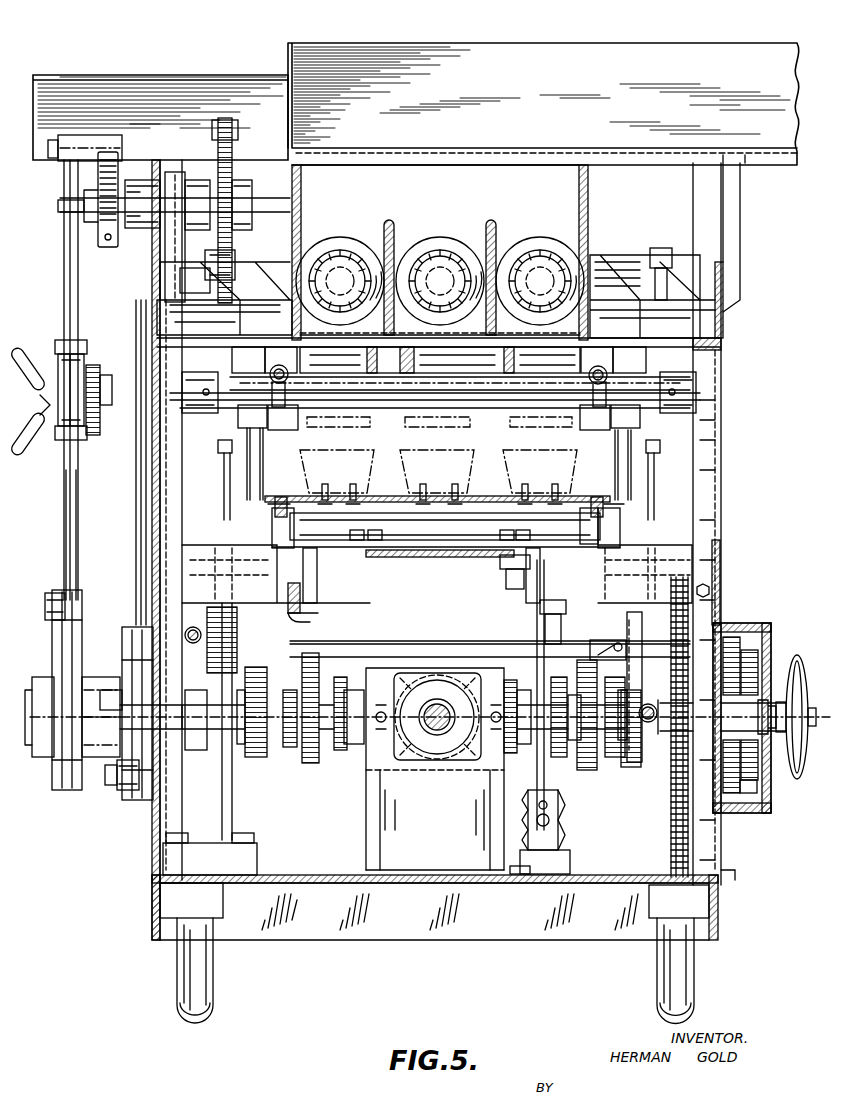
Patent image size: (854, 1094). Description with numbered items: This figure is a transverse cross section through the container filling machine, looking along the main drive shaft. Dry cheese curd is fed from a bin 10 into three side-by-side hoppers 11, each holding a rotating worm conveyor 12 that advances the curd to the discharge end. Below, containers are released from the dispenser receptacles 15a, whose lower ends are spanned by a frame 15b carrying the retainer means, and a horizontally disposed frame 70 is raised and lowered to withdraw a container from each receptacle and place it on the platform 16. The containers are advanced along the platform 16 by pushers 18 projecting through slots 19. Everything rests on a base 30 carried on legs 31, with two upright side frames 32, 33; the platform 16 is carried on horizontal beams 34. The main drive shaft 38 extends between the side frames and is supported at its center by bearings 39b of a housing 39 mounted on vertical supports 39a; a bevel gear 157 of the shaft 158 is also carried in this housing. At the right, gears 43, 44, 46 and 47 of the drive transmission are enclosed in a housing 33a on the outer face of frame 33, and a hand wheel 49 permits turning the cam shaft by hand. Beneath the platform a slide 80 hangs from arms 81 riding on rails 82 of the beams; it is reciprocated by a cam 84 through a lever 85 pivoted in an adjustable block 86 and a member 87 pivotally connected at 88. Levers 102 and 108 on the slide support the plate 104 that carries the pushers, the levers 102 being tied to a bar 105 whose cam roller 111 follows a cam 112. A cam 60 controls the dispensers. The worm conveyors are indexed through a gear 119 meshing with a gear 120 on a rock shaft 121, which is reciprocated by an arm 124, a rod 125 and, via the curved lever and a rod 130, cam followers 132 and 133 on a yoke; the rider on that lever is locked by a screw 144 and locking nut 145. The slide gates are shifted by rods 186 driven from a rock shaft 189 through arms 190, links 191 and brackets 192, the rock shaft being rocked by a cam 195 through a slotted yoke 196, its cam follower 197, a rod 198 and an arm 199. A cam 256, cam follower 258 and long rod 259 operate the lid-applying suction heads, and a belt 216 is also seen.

The bin 10 is at (568, 64).
The hopper 11 is at (318, 228).
The worm conveyor 12 is at (352, 250).
The receptacle 15a is at (415, 360).
The frame 15b is at (492, 378).
The platform 16 is at (590, 496).
The pusher 18 is at (422, 490).
The slot 19 is at (522, 493).
The base 30 is at (292, 876).
The leg 31 is at (210, 1022).
The side frame 32 is at (174, 502).
The side frame 33 is at (722, 464).
The housing 33a is at (724, 838).
The beam 34 is at (278, 500).
The main drive shaft 38 is at (236, 762).
The housing 39 is at (453, 768).
The vertical support 39a is at (488, 824).
The bearing 39b is at (512, 756).
The gear 43 is at (755, 735).
The gear 44 is at (736, 840).
The gear 46 is at (726, 700).
The gear 47 is at (750, 616).
The hand wheel 49 is at (796, 656).
The cam 60 is at (318, 764).
The frame 70 is at (492, 406).
The slide 80 is at (420, 560).
The arm 81 is at (340, 565).
The rail 82 is at (296, 540).
The cam 84 is at (560, 790).
The lever 85 is at (556, 760).
The adjustable block 86 is at (530, 868).
The member 87 is at (524, 565).
The pivot 88 is at (559, 610).
The lever 102 is at (300, 582).
The plate 104 is at (398, 516).
The bar 105 is at (321, 620).
The lever 108 is at (580, 515).
The cam roller 111 is at (275, 760).
The cam 112 is at (290, 750).
The gear 119 is at (220, 260).
The gear 120 is at (235, 188).
The rock shaft 121 is at (251, 206).
The arm 124 is at (118, 178).
The rod 125 is at (64, 242).
The rod 130 is at (64, 514).
The cam follower 132 is at (47, 594).
The cam follower 133 is at (82, 790).
The screw 144 is at (60, 440).
The locking nut 145 is at (28, 348).
The bevel gear 157 is at (458, 688).
The shaft 158 is at (438, 700).
The rod 186 is at (290, 382).
The rock shaft 189 is at (262, 262).
The arm 190 is at (250, 398).
The link 191 is at (266, 440).
The bracket 192 is at (290, 420).
The cam 195 is at (130, 627).
The slotted yoke 196 is at (140, 802).
The cam follower 197 is at (120, 792).
The rod 198 is at (136, 530).
The arm 199 is at (143, 237).
The belt 216 is at (222, 646).
The cam 256 is at (642, 632).
The cam follower 258 is at (634, 752).
The rod 259 is at (649, 702).